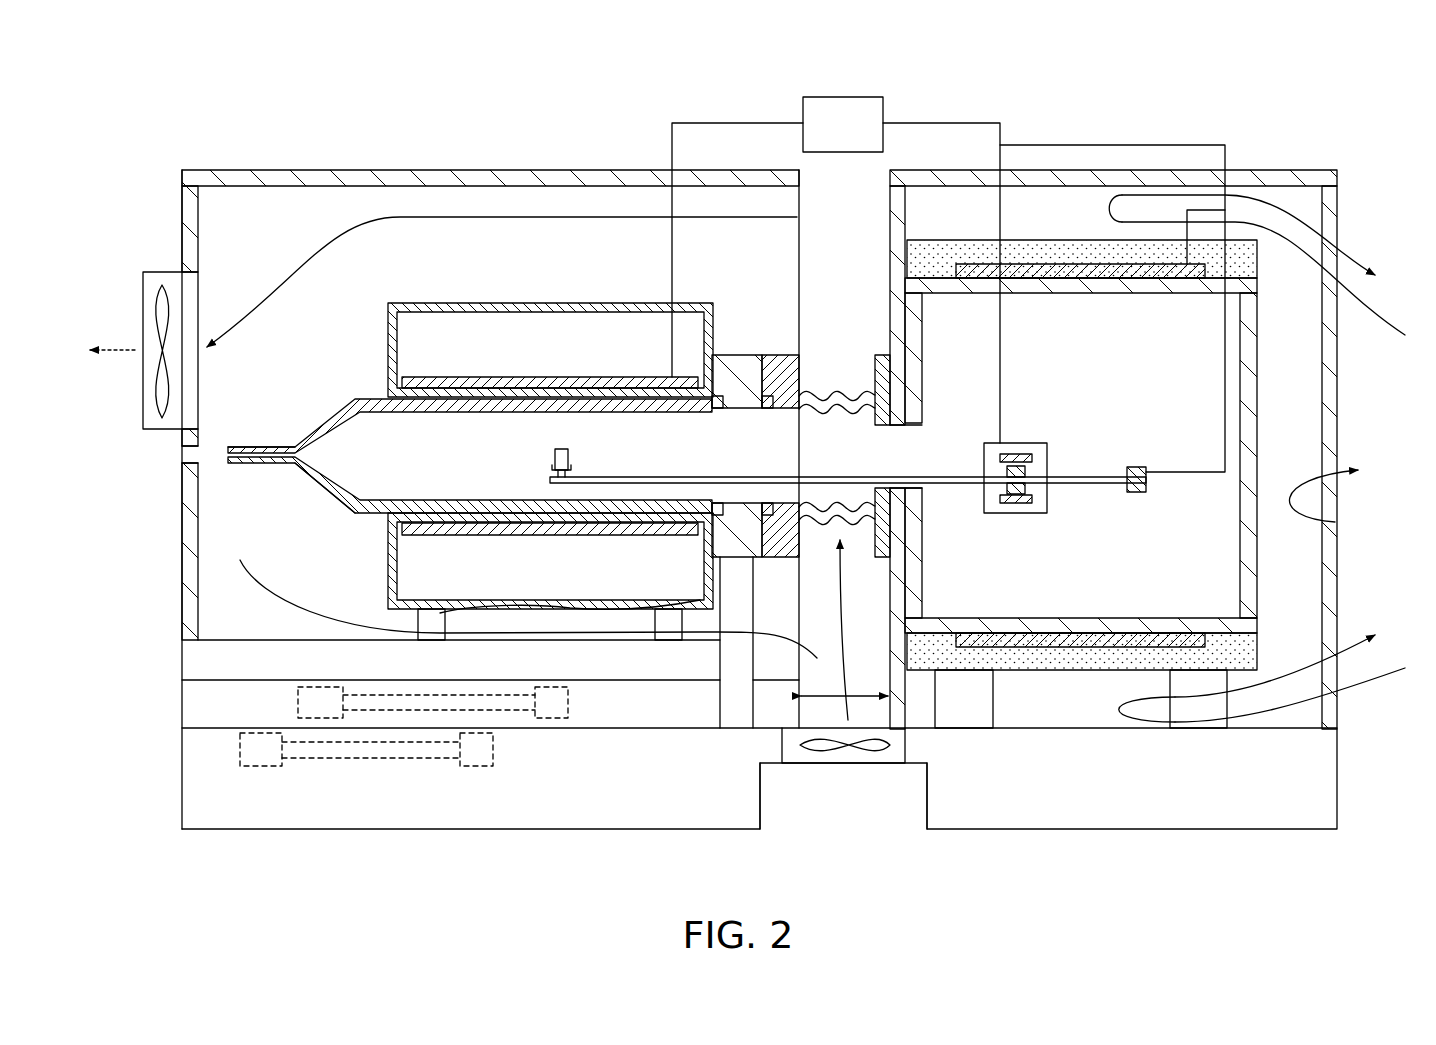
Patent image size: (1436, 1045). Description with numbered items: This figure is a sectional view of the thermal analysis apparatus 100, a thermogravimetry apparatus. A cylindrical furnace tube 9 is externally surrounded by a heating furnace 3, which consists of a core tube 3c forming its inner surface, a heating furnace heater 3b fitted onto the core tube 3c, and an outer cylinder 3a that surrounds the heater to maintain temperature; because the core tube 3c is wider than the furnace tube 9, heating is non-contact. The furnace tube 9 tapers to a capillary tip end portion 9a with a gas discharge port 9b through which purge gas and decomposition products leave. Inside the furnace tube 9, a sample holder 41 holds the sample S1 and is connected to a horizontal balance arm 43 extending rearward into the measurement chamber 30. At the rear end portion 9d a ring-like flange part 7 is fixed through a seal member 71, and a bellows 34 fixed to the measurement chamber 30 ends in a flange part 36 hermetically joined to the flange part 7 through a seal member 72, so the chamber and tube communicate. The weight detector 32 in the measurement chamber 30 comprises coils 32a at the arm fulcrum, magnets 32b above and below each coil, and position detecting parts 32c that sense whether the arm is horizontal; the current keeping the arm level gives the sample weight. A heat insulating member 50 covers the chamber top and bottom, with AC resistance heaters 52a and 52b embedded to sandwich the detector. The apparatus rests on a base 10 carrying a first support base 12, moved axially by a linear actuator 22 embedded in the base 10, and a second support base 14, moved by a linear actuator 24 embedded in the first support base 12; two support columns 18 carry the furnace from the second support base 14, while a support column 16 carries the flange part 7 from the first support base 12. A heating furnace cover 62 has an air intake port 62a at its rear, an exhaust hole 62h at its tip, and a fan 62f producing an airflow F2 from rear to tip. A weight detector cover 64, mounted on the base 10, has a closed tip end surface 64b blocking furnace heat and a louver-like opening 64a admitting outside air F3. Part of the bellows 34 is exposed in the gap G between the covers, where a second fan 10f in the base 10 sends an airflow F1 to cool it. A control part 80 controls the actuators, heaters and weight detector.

The heating furnace 3 is at (470, 341).
The outer cylinder 3a is at (520, 303).
The heating furnace heater 3b is at (570, 377).
The core tube 3c is at (620, 399).
The flange part 7 is at (751, 398).
The seal member 71 is at (720, 395).
The seal member 72 is at (767, 398).
The furnace tube 9 is at (469, 443).
The tip end portion 9a is at (245, 463).
The gas discharge port 9b is at (228, 447).
The rear end portion 9d is at (387, 523).
The base 10 is at (759, 782).
The second fan 10f is at (830, 755).
The first support base 12 is at (190, 711).
The second support base 14 is at (190, 665).
The support column 16 is at (745, 603).
The support columns 18 is at (513, 608).
The linear actuator 22 is at (255, 766).
The linear actuator 24 is at (325, 718).
The measurement chamber 30 is at (1257, 438).
The weight detector 32 is at (1082, 529).
The coils 32a is at (1025, 487).
The magnets 32b is at (1017, 503).
The position detecting parts 32c is at (1152, 521).
The bellows 34 is at (830, 398).
The flange part 36 is at (790, 355).
The sample holder 41 is at (572, 458).
The balance arm 43 is at (795, 477).
The heat insulating member 50 is at (1101, 462).
The AC resistance heater 52a is at (1052, 264).
The AC resistance heater 52b is at (1057, 648).
The heating furnace cover 62 is at (340, 170).
The air intake port 62a is at (800, 268).
The fan 62f is at (143, 396).
The exhaust hole 62h is at (188, 456).
The weight detector cover 64 is at (1124, 418).
The opening 64a is at (1337, 380).
The tip end surface 64b is at (890, 237).
The control part 80 is at (853, 97).
The thermal analysis apparatus 100 is at (1113, 128).
The sample S1 is at (553, 458).
The airflow F1 is at (860, 630).
The airflow F2 is at (512, 437).
The outside air F3 is at (1257, 458).
The gap G is at (856, 694).